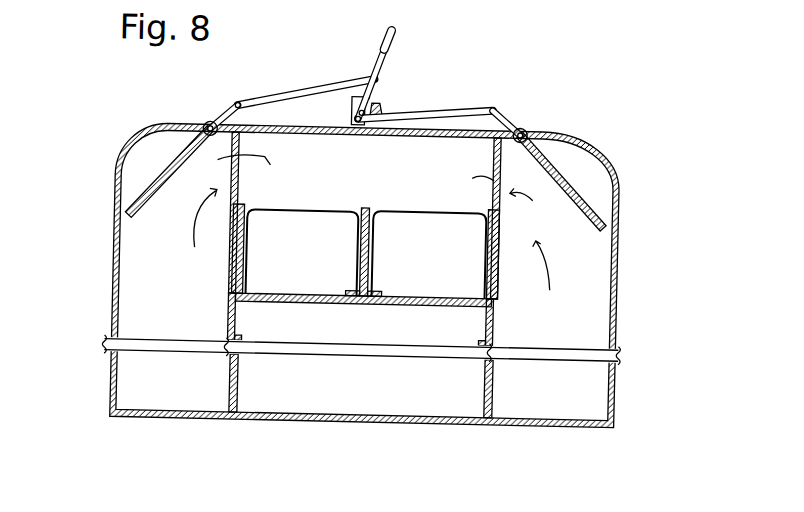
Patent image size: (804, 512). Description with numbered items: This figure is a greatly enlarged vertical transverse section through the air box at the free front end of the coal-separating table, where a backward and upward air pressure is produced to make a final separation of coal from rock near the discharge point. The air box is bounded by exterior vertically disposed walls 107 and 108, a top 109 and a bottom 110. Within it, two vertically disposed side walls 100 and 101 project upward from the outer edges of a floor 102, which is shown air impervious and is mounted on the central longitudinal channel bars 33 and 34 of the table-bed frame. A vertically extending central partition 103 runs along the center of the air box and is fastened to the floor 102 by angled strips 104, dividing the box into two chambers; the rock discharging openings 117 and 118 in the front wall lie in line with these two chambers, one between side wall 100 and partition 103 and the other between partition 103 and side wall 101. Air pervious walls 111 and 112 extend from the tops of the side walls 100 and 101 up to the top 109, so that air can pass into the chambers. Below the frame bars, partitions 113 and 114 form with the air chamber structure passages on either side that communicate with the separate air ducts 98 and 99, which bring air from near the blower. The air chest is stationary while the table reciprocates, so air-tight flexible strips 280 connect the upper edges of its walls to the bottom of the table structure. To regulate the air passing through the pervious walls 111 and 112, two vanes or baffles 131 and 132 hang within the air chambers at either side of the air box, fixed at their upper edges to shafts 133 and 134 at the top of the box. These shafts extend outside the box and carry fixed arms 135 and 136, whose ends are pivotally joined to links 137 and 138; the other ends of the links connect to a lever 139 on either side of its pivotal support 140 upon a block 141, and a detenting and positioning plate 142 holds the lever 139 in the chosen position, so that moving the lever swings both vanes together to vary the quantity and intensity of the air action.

The central longitudinally disposed channel bar 33 is at (237, 325).
The central longitudinally disposed channel bar 34 is at (487, 322).
The air duct 98 is at (591, 385).
The air duct 99 is at (132, 382).
The side wall 100 is at (232, 278).
The side wall 101 is at (498, 292).
The floor 102 is at (318, 305).
The central partition 103 is at (364, 208).
The angled strips 104 is at (348, 292).
The exterior vertically-disposed wall 107 is at (113, 271).
The exterior vertically-disposed wall 108 is at (617, 261).
The top 109 is at (530, 128).
The bottom 110 is at (355, 423).
The air pervious wall 111 is at (236, 191).
The air pervious wall 112 is at (491, 194).
The partition 113 is at (241, 380).
The partition 114 is at (487, 378).
The rock discharging opening 117 is at (292, 230).
The rock discharging opening 118 is at (421, 227).
The vane or baffle 131 is at (163, 177).
The vane or baffle 132 is at (566, 186).
The shaft 133 is at (206, 125).
The shaft 134 is at (518, 126).
The arm 135 is at (232, 104).
The arm 136 is at (507, 126).
The link 137 is at (301, 93).
The link 138 is at (463, 107).
The lever 139 is at (377, 63).
The pivotal support 140 is at (373, 96).
The block 141 is at (348, 120).
The detenting and positioning plate 142 is at (378, 102).
The air-tight flexible strip 280 is at (108, 347).